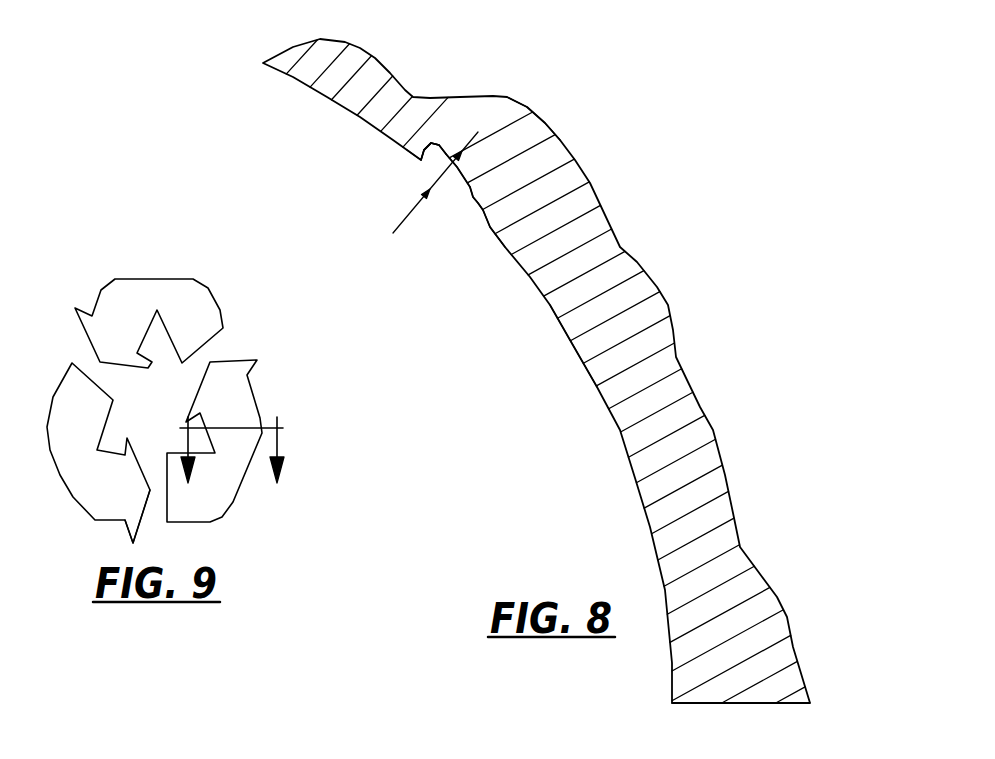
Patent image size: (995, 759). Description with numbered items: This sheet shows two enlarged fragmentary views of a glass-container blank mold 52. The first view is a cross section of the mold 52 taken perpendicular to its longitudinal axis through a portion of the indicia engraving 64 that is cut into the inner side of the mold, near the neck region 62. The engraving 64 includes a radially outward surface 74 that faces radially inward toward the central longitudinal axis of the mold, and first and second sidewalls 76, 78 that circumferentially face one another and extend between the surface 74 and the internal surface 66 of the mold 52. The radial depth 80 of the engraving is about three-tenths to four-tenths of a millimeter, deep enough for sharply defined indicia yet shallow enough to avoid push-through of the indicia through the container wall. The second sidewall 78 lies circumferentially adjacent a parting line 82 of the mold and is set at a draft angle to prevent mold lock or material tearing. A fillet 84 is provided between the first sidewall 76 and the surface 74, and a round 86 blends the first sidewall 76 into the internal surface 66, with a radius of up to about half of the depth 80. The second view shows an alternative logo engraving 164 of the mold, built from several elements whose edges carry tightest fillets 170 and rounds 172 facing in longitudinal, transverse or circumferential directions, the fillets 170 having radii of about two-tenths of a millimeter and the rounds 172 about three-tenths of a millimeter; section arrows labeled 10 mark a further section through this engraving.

In FIG. 8, the blank mold 52 is at (637, 86).
In FIG. 8, the neck region 62 is at (502, 118).
In FIG. 8, the indicia engraving 64 is at (387, 274).
In FIG. 8, the internal surface 66 is at (571, 338).
In FIG. 8, the radially outward surface 74 is at (457, 172).
In FIG. 8, the first sidewall 76 is at (420, 165).
In FIG. 8, the second sidewall 78 is at (473, 197).
In FIG. 8, the radial depth 80 is at (397, 236).
In FIG. 8, the parting line 82 is at (761, 704).
In FIG. 8, the fillet 84 is at (430, 128).
In FIG. 8, the round 86 is at (396, 163).
In FIG. 9, the logo engraving 164 is at (141, 383).
In FIG. 9, the fillets 170 is at (84, 461).
In FIG. 9, the rounds 172 is at (116, 540).
In FIG. 9, the section line 10 is at (233, 468).